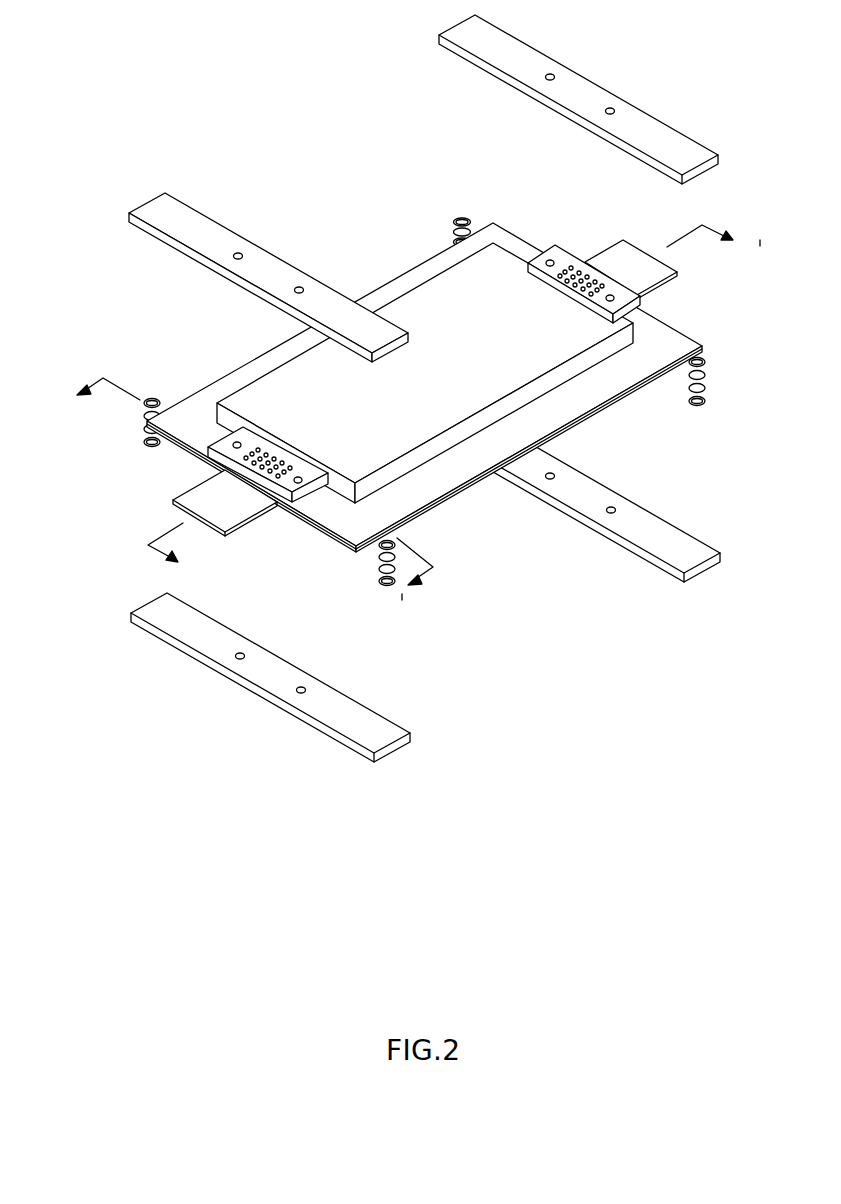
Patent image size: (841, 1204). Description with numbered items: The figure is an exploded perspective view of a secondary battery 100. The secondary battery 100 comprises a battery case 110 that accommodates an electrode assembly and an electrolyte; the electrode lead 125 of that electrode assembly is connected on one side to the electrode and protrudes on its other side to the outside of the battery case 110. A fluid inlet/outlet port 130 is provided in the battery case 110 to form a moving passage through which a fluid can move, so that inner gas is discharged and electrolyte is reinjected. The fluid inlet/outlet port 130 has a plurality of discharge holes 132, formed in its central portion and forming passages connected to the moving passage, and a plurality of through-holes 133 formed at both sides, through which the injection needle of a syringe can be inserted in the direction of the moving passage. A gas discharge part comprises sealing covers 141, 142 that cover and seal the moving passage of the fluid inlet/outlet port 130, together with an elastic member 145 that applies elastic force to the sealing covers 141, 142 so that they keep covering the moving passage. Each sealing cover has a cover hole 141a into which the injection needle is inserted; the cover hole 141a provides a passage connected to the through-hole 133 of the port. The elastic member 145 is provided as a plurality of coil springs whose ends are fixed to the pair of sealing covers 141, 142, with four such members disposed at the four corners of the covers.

The secondary battery 100 is at (173, 35).
The battery case 110 is at (688, 325).
The electrode lead 125 is at (203, 508).
The fluid inlet/outlet port 130 is at (569, 236).
The discharge holes 132 is at (587, 277).
The through-holes 133 is at (648, 298).
The sealing cover 141 is at (437, 388).
The cover hole 141a is at (612, 107).
The sealing cover 142 is at (658, 500).
The elastic member 145 is at (150, 397).